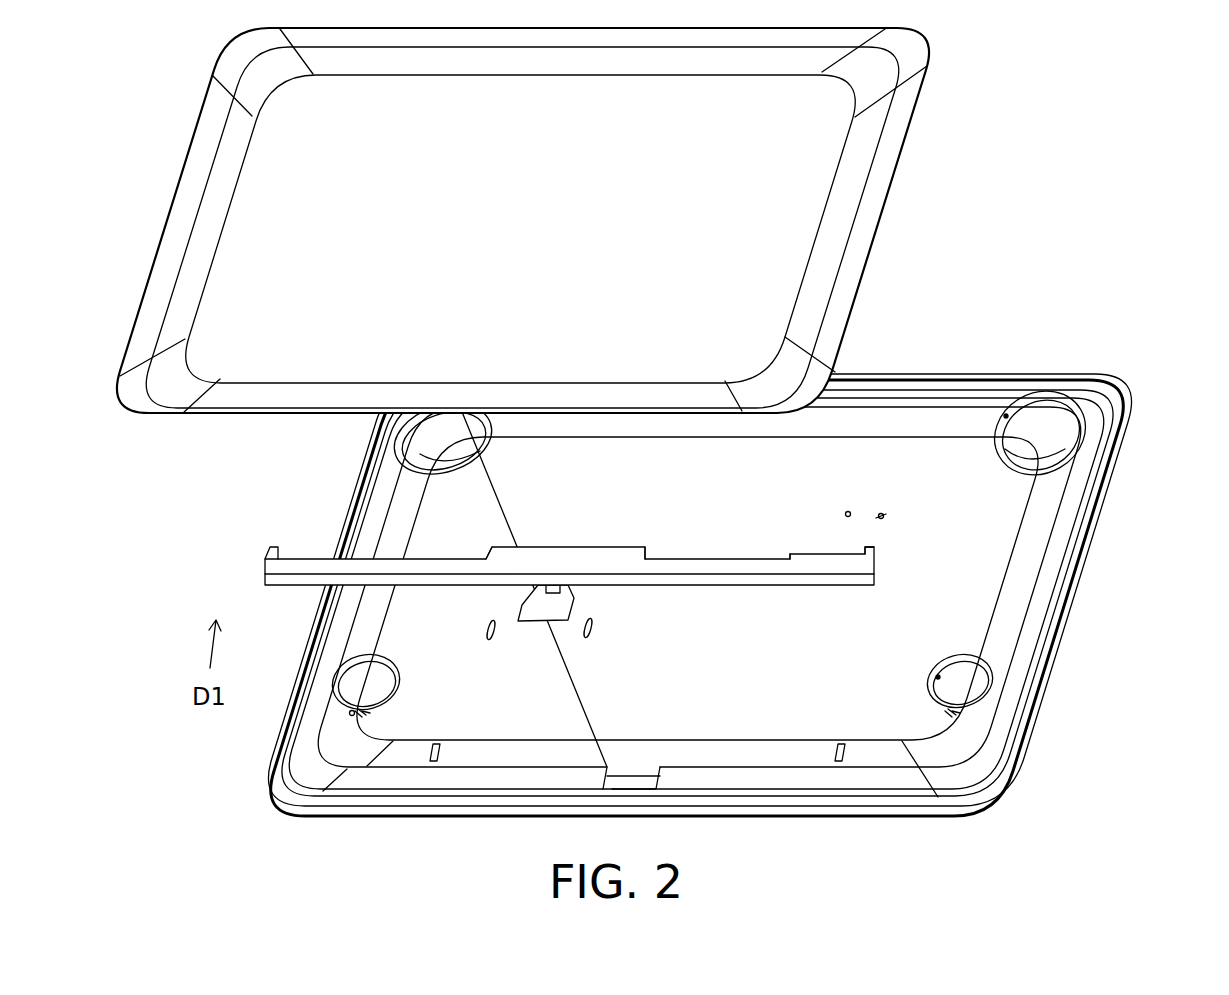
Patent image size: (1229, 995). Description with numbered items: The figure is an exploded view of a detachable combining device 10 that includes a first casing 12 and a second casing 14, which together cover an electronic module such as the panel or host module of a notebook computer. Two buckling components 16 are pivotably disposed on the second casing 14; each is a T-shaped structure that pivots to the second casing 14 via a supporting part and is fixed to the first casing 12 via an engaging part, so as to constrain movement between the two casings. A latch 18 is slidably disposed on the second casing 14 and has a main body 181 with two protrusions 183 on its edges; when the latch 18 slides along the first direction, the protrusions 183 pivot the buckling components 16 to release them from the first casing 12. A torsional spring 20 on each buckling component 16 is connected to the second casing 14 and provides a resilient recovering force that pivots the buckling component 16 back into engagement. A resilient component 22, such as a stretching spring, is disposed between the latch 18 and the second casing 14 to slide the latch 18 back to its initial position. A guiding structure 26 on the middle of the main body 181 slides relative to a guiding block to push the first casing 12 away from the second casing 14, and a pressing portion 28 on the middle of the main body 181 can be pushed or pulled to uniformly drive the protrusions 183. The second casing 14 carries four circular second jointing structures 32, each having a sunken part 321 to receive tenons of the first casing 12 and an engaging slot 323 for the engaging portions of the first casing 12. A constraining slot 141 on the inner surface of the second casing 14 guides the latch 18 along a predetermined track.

The detachable combining device 10 is at (1075, 80).
The first casing 12 is at (878, 175).
The second casing 14 is at (699, 570).
The constraining slot 141 is at (835, 740).
The buckling component 16 is at (333, 705).
The latch 18 is at (608, 596).
The main body 181 is at (676, 560).
The protrusion 183 is at (866, 545).
The torsional spring 20 is at (840, 504).
The resilient component 22 is at (592, 620).
The guiding structure 26 is at (560, 539).
The pressing portion 28 is at (556, 592).
The second jointing structure 32 is at (944, 655).
The sunken part 321 is at (929, 668).
The engaging slot 323 is at (980, 703).